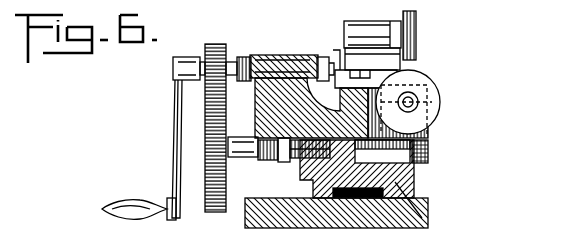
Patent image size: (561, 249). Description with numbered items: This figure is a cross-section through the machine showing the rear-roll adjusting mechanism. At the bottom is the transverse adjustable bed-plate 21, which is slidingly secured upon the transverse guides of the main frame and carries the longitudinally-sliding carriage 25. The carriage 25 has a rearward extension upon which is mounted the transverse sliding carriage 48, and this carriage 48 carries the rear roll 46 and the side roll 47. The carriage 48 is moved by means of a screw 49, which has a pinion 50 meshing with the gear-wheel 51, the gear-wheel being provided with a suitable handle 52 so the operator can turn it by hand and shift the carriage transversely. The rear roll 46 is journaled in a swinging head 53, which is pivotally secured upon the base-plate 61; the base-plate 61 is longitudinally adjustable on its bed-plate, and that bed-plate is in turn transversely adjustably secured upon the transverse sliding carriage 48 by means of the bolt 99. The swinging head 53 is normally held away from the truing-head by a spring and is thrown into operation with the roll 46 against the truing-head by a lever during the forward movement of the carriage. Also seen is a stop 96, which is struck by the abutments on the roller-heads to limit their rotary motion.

The transverse adjustable bed-plate 21 is at (428, 213).
The longitudinally-sliding carriage 25 is at (416, 172).
The rear roll 46 is at (417, 42).
The side roll 47 is at (437, 101).
The transverse sliding carriage 48 is at (430, 134).
The screw 49 is at (291, 160).
The pinion 50 is at (206, 157).
The gear-wheel 51 is at (224, 48).
The handle 52 is at (175, 128).
The swinging head 53 is at (352, 30).
The base-plate 61 is at (386, 60).
The stop 96 is at (345, 76).
The bolt 99 is at (360, 67).